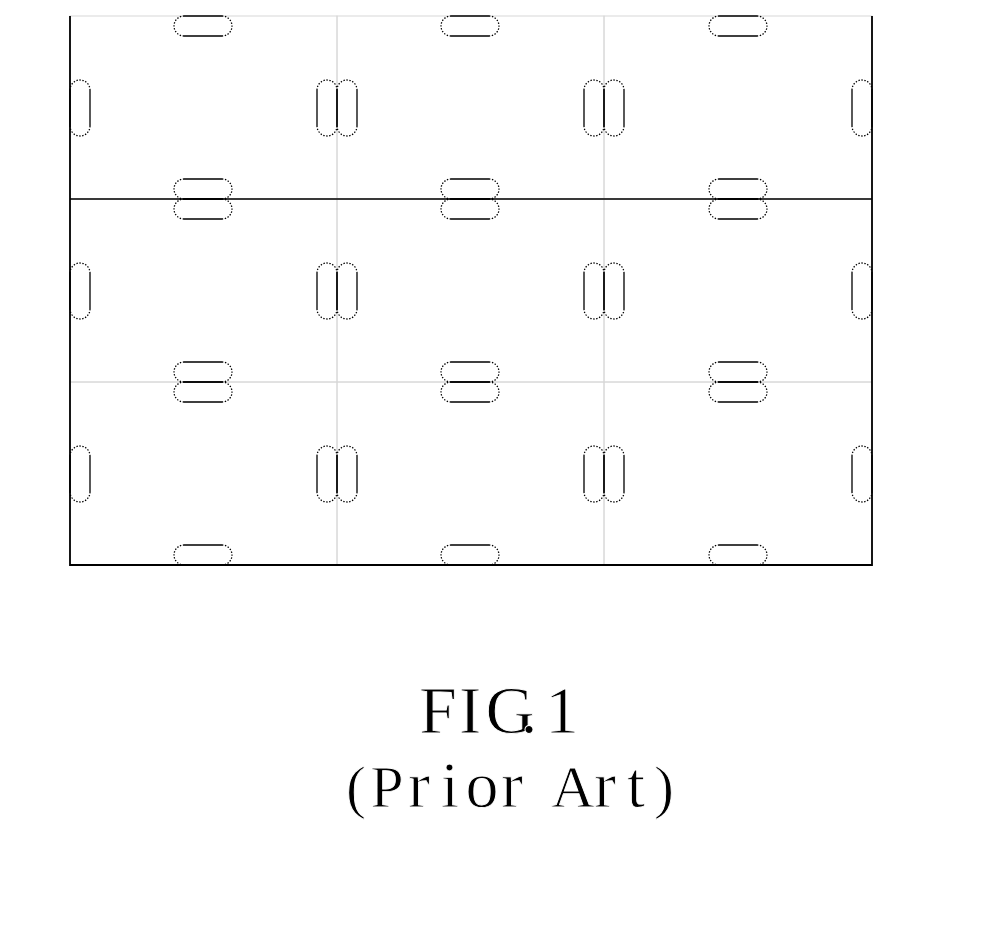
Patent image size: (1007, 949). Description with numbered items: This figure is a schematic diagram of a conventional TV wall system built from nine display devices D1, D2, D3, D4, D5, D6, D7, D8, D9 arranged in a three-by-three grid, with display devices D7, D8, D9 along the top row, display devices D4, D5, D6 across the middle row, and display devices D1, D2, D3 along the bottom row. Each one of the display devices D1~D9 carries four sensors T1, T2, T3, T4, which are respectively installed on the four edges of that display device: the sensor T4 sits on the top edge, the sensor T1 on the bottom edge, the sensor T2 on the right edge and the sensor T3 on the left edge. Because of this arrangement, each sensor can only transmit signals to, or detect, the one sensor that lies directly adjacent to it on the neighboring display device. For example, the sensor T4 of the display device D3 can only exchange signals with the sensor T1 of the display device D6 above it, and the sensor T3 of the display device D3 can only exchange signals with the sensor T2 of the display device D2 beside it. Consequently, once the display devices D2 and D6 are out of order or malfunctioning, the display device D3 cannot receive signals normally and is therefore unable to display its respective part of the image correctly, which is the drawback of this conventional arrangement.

The sensor T1 is at (470, 372).
The sensor T2 is at (594, 291).
The sensor T3 is at (347, 291).
The sensor T4 is at (470, 209).
The display device D1 is at (203, 473).
The display device D2 is at (470, 473).
The display device D3 is at (738, 473).
The display device D4 is at (203, 290).
The display device D5 is at (470, 290).
The display device D6 is at (738, 290).
The display device D7 is at (203, 107).
The display device D8 is at (470, 107).
The display device D9 is at (738, 107).